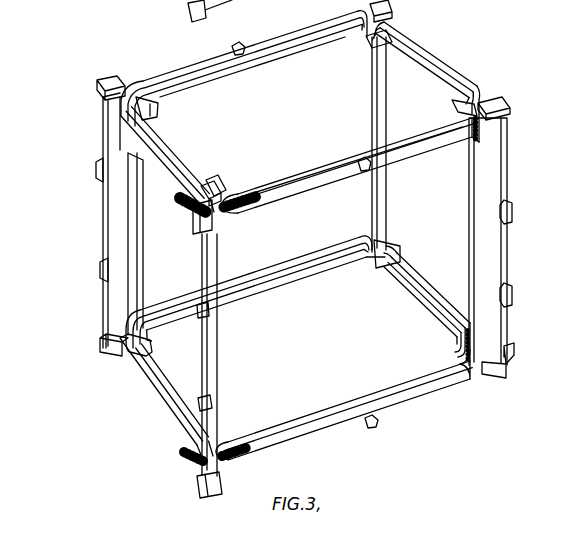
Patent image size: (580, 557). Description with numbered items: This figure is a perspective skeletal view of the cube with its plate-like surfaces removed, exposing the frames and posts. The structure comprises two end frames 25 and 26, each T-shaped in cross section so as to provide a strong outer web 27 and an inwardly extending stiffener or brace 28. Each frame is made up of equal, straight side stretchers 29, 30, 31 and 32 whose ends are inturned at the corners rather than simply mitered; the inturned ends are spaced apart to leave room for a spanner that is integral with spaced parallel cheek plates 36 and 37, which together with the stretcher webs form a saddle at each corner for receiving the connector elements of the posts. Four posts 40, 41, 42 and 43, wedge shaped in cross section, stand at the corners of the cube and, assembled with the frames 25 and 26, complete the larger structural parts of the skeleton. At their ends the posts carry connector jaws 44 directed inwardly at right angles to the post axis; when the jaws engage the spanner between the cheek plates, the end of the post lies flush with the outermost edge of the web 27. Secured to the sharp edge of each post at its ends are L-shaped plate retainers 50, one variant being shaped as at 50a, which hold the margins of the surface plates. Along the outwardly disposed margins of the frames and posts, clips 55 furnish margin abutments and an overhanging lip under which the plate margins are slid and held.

The end frame 25 is at (274, 198).
The end frame 26 is at (322, 418).
The outer web 27 is at (300, 109).
The stiffener or brace 28 is at (303, 47).
The side stretcher 29 is at (442, 78).
The side stretcher 30 is at (348, 172).
The side stretcher 31 is at (168, 170).
The side stretcher 32 is at (197, 78).
The cheek plate 36 is at (209, 192).
The cheek plate 37 is at (226, 198).
The post 40 is at (492, 266).
The post 41 is at (217, 375).
The post 42 is at (118, 232).
The post 43 is at (376, 103).
The connector jaw 44 is at (362, 37).
The plate retainer 50 is at (191, 14).
The plate retainer 50a is at (510, 213).
The clip 55 is at (247, 44).